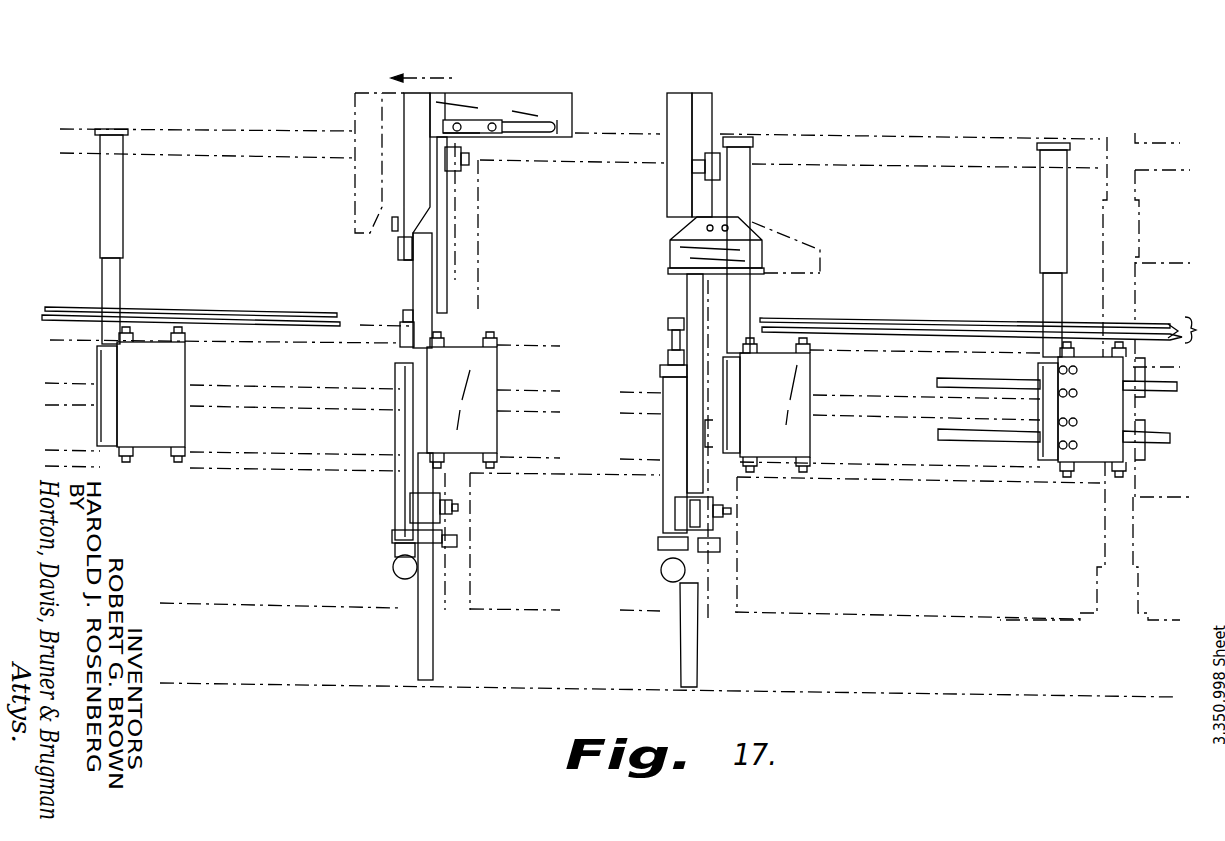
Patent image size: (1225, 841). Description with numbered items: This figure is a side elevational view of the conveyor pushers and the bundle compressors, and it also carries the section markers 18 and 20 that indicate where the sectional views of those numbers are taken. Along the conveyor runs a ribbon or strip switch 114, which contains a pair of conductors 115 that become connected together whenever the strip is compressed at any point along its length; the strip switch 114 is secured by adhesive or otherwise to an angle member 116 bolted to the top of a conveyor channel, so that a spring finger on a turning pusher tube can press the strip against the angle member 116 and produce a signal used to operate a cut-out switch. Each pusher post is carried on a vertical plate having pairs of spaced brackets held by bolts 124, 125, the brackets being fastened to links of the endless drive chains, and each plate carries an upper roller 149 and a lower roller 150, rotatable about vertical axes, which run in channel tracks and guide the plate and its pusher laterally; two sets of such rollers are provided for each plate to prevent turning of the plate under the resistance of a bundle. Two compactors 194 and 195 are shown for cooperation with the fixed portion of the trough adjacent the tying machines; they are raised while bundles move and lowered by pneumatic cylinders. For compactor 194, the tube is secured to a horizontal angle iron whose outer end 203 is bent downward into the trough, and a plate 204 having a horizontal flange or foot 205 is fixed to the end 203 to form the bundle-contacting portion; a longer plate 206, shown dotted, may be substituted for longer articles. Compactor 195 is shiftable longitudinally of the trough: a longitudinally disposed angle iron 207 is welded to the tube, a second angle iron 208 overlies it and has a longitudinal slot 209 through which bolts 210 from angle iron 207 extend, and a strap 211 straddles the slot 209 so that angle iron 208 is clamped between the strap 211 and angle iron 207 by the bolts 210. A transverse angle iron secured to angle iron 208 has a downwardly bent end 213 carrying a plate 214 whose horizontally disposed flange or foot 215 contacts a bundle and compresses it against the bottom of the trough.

The section line 18- 18 is at (355, 50).
The section line 20- 20 is at (661, 71).
The strip switch 114 is at (278, 315).
The conductors 115 is at (1197, 332).
The angle member 116 is at (212, 311).
The bolts 124 is at (1079, 368).
The bolts 125 is at (1079, 420).
The upper roller 149 is at (495, 340).
The lower roller 150 is at (488, 460).
The compactor 194 is at (720, 88).
The compactor 195 is at (459, 86).
The outer end 203 is at (668, 172).
The plate 204 is at (670, 250).
The horizontal flange or foot 205 is at (642, 275).
The longer plate 206 is at (805, 230).
The angle iron 207 is at (518, 112).
The second angle iron 208 is at (572, 124).
The longitudinal slot 209 is at (541, 123).
The bolts 210 is at (492, 122).
The strap 211 is at (479, 134).
The downwardly bent end 213 is at (405, 172).
The plate 214 is at (399, 246).
The horizontally disposed flange or foot 215 is at (401, 278).